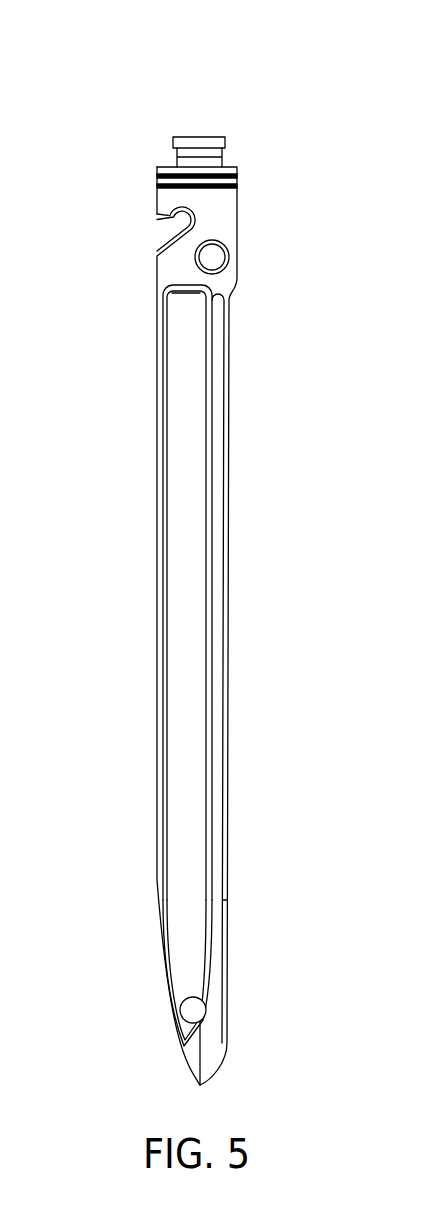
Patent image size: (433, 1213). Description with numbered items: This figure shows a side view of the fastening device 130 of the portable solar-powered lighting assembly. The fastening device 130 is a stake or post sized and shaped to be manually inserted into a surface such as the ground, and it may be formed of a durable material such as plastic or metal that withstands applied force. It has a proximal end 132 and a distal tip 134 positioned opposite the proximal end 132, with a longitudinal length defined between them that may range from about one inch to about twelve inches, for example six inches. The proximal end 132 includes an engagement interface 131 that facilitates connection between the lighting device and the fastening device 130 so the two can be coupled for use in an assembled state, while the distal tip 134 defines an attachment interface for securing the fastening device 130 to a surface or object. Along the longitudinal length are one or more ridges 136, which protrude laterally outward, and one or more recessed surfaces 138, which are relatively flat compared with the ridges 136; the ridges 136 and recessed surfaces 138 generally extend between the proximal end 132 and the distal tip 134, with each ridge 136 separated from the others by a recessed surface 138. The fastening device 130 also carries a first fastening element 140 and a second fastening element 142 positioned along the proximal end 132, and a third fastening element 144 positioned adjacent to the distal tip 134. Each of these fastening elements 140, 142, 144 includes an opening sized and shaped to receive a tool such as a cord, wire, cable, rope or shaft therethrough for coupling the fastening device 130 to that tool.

The fastening device 130 is at (121, 94).
The engagement interface 131 is at (193, 135).
The proximal end 132 is at (230, 205).
The distal tip 134 is at (210, 1050).
The ridge 136 is at (212, 483).
The recessed surface 138 is at (172, 632).
The first fastening element 140 is at (230, 253).
The second fastening element 142 is at (143, 248).
The third fastening element 144 is at (172, 1012).